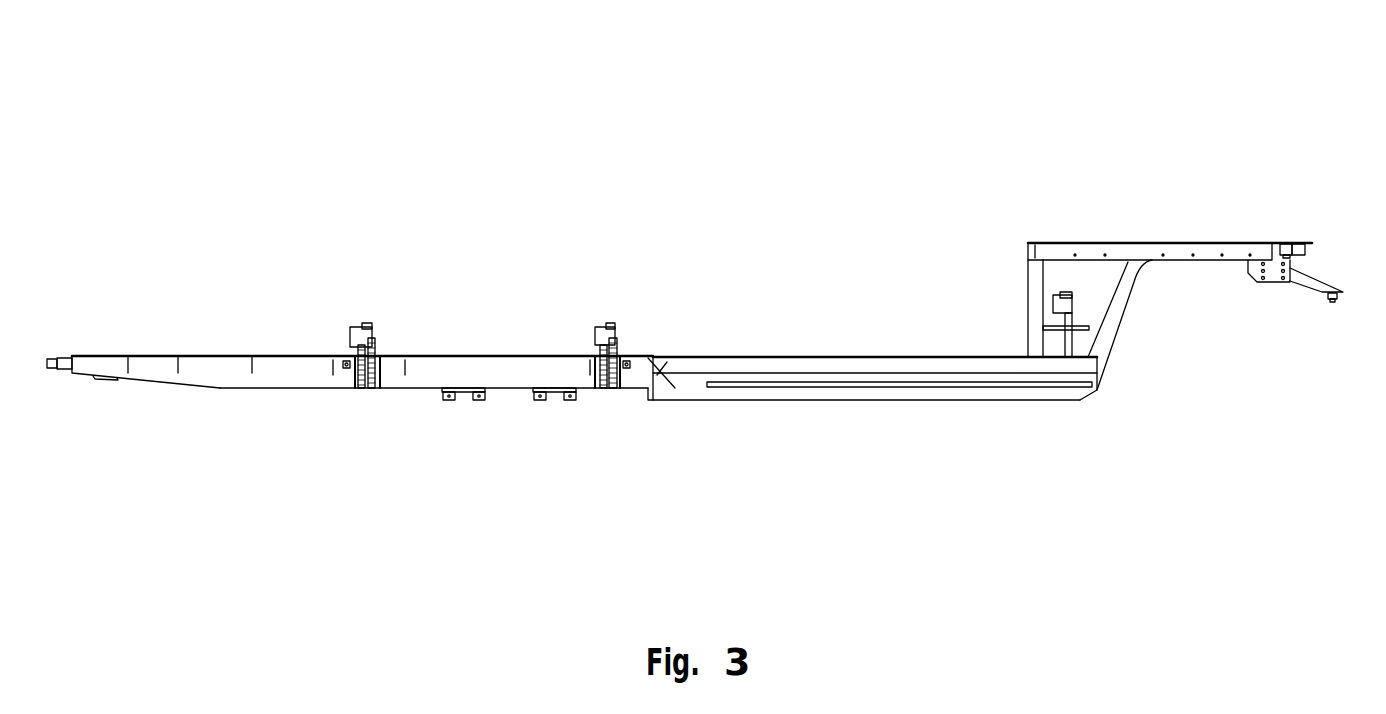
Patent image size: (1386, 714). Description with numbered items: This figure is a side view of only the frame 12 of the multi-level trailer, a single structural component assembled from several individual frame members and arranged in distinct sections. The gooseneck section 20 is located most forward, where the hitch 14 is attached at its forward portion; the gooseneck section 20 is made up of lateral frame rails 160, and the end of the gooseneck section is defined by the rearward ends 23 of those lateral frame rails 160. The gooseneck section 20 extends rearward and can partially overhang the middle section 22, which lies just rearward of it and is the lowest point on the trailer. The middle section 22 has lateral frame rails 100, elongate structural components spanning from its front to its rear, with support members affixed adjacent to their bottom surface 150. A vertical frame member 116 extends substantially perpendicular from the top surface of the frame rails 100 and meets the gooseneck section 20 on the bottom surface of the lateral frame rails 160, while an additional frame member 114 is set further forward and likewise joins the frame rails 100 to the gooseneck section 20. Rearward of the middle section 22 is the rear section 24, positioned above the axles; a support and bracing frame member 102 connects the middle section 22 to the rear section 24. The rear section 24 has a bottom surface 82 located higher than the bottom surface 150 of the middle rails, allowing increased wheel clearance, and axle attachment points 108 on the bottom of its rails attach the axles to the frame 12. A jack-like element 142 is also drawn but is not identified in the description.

The frame 12 is at (607, 166).
The bottom surface 82 is at (220, 393).
The rear section 24 is at (355, 415).
The second jack assembly 142 is at (606, 325).
The axle attachment points 108 is at (540, 402).
The middle section 22 is at (898, 410).
The lateral frame rails 100 is at (808, 360).
The bottom surface 150 is at (687, 402).
The support and bracing frame member 102 is at (669, 357).
The gooseneck section 20 is at (1188, 293).
The vertical frame member 116 is at (1033, 282).
The additional frame member 114 is at (1112, 290).
The rearward ends 23 is at (1030, 248).
The lateral frame rails 160 is at (1234, 250).
The hitch 14 is at (1332, 306).